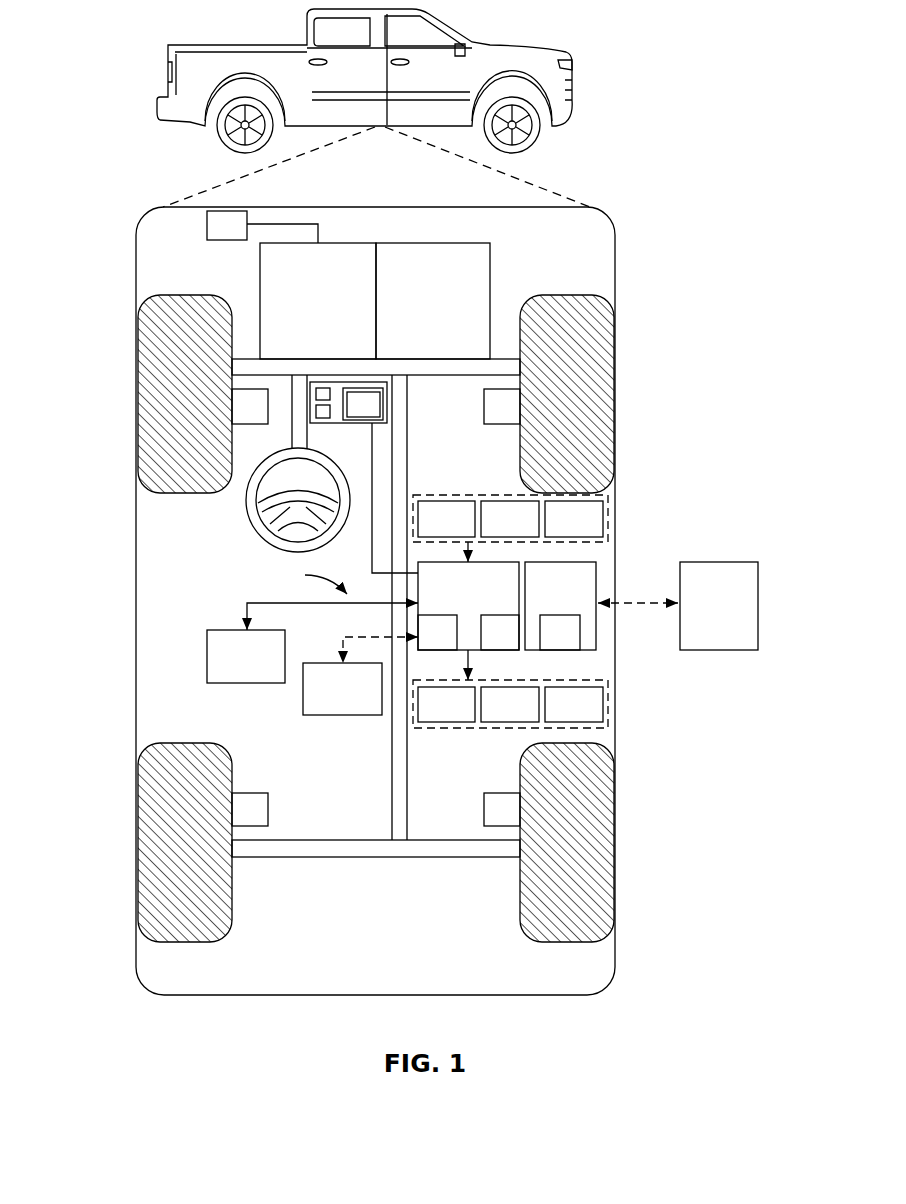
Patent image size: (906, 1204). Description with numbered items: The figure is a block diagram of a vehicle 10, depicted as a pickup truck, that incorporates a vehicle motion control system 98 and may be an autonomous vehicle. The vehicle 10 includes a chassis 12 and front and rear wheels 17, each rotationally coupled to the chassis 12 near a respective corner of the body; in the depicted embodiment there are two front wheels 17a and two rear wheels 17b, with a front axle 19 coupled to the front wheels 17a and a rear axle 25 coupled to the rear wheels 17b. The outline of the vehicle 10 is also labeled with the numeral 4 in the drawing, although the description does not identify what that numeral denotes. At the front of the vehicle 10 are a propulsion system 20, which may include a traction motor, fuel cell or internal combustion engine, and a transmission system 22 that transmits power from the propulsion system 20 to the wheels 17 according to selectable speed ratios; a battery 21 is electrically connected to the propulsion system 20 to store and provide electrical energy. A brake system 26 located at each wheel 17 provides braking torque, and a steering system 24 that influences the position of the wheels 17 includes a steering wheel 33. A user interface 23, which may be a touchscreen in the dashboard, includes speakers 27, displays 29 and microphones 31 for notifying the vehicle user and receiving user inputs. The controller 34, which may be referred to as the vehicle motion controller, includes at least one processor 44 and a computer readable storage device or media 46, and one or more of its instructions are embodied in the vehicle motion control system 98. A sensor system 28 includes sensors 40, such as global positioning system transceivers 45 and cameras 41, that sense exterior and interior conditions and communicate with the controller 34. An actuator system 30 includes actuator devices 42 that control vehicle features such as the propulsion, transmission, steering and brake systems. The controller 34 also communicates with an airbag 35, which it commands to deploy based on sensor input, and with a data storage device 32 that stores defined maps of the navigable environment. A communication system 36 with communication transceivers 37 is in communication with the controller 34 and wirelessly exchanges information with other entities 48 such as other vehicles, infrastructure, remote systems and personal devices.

The vehicle 10 is at (518, 43).
The vehicle body 4 is at (136, 572).
The front and rear wheels 17 is at (376, 607).
The front wheels 17a is at (153, 383).
The rear wheels 17b is at (150, 835).
The battery 21 is at (228, 211).
The propulsion system 20 is at (302, 312).
The transmission system 22 is at (417, 312).
The front axle 19 is at (462, 378).
The rear axle 25 is at (435, 840).
The brake system 26 is at (237, 419).
The steering wheel 33 is at (248, 515).
The steering system 24 is at (314, 427).
The speakers 27 is at (323, 388).
The displays 29 is at (315, 412).
The user interface 23 is at (360, 388).
The microphones 31 is at (376, 416).
The chassis 12 is at (392, 742).
The sensor system 28 is at (475, 495).
The sensors 40 is at (431, 532).
The global positioning system transceivers 45 is at (495, 532).
The cameras 41 is at (559, 532).
The controller 34 is at (453, 599).
The processor 44 is at (424, 645).
The computer readable storage device or media 46 is at (487, 645).
The communication system 36 is at (545, 599).
The communication transceivers 37 is at (547, 645).
The other entities 48 is at (704, 615).
The actuator system 30 is at (483, 728).
The actuator devices 42 is at (431, 718).
The airbag 35 is at (231, 668).
The data storage device 32 is at (327, 700).
The vehicle motion control system 98 is at (309, 579).